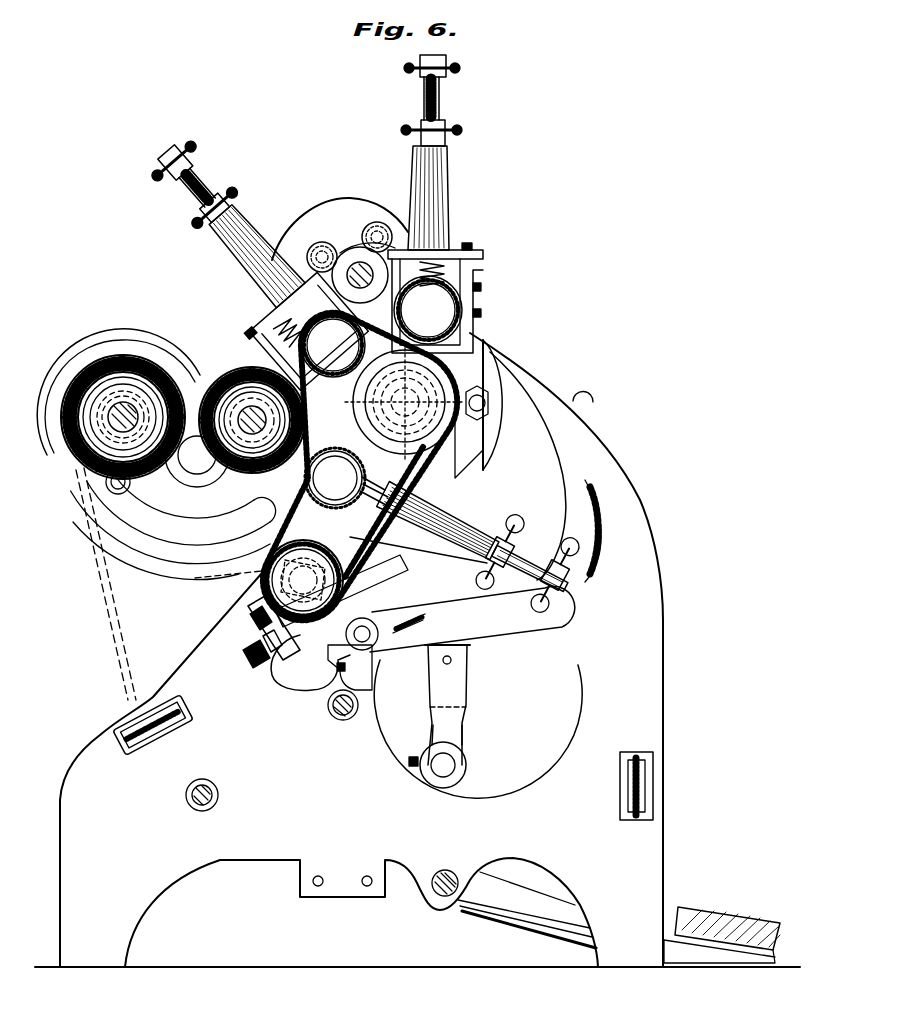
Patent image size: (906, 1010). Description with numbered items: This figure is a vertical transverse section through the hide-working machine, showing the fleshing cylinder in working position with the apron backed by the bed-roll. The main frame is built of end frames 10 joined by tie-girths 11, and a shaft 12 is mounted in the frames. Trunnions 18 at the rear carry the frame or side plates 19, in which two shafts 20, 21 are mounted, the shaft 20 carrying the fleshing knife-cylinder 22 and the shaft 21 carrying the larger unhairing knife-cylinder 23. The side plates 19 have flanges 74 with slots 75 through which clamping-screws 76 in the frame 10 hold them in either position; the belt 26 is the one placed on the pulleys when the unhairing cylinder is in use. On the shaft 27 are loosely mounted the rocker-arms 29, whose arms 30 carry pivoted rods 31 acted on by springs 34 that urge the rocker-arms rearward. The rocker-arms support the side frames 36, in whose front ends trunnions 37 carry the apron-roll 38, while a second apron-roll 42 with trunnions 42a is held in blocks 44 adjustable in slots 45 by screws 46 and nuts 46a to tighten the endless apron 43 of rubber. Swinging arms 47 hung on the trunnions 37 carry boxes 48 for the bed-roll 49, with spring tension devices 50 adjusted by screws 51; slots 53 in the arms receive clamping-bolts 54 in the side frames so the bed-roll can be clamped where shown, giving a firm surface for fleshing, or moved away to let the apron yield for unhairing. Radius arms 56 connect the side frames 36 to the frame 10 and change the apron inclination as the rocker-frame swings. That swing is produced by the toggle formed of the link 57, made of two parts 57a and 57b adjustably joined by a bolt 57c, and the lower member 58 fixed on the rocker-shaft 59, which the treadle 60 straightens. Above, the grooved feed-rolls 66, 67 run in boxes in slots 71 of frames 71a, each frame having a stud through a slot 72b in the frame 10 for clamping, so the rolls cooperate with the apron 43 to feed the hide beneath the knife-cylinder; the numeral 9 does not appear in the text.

The drive chain / feed head 9 is at (355, 176).
The end frame 10 is at (417, 582).
The tie-girth 11 is at (645, 790).
The shaft 12 is at (205, 812).
The trunnion 18 is at (197, 461).
The frame or side plates 19 is at (181, 506).
The shaft 20 is at (235, 372).
The shaft 21 is at (108, 425).
The knife-cylinder 22 is at (208, 367).
The knife-cylinder 23 is at (119, 358).
The belt 26 is at (112, 606).
The shaft 27 is at (343, 720).
The rocker-arm 29 is at (370, 672).
The arm 30 is at (580, 490).
The rod 31 is at (600, 545).
The spring 34 is at (602, 523).
The side frame 36 is at (292, 648).
The trunnion 37 is at (470, 363).
The apron-roll 38 is at (493, 449).
The second apron-roll 42 is at (268, 588).
The trunnion 42a is at (250, 606).
The endless apron 43 is at (395, 569).
The block 44 is at (210, 581).
The slot 45 is at (303, 576).
The screw 46 is at (250, 660).
The nut 46a is at (256, 632).
The swinging arm 47 is at (445, 505).
The box 48 is at (335, 478).
The bed-roll 49 is at (335, 478).
The spring tension device 50 is at (500, 545).
The screw 51 is at (551, 572).
The slot 53 is at (470, 437).
The clamping-bolt 54 is at (490, 403).
The radius arm 56 is at (460, 619).
The link 57 is at (455, 696).
The link part 57a is at (470, 652).
The link part 57b is at (462, 728).
The bolt 57c is at (452, 662).
The lower toggle member 58 is at (462, 780).
The rocker-shaft 59 is at (449, 878).
The treadle 60 is at (705, 915).
The feed-roll 66 is at (428, 310).
The feed-roll 67 is at (333, 345).
The slot 71 is at (480, 254).
The frame 71a is at (262, 338).
The slot 72b is at (345, 228).
The flange 74 is at (162, 553).
The slot 75 is at (148, 522).
The clamping-screw 76 is at (110, 490).